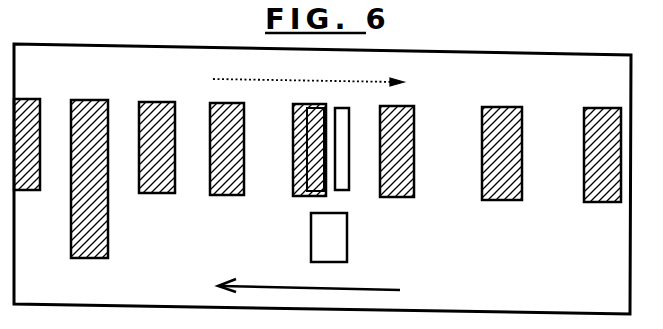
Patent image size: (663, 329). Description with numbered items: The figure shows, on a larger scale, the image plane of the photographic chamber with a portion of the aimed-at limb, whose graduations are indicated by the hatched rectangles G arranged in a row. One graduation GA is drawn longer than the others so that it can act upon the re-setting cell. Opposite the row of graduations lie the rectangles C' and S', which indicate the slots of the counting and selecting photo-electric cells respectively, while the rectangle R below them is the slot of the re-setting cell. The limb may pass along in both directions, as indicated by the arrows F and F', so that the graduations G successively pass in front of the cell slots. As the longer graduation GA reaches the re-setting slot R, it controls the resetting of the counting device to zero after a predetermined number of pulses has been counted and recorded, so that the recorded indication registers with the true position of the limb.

The graduations G is at (22, 190).
The longer graduation GA is at (92, 238).
The slot of the counting cell C' is at (297, 173).
The slot of the selecting cell S' is at (359, 177).
The slot of the re-setting cell R is at (339, 249).
The arrow indicating direction of limb movement F is at (308, 71).
The arrow indicating opposite direction of limb movement F' is at (309, 281).